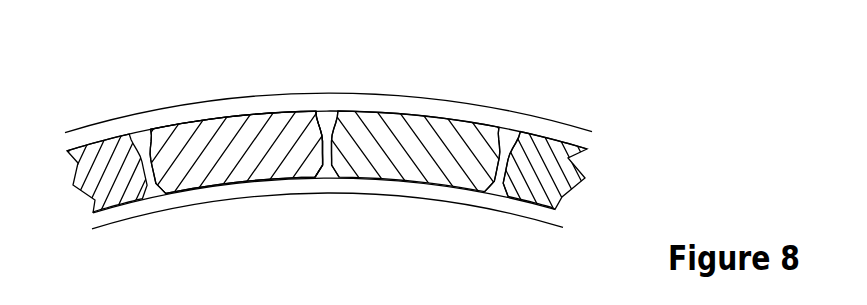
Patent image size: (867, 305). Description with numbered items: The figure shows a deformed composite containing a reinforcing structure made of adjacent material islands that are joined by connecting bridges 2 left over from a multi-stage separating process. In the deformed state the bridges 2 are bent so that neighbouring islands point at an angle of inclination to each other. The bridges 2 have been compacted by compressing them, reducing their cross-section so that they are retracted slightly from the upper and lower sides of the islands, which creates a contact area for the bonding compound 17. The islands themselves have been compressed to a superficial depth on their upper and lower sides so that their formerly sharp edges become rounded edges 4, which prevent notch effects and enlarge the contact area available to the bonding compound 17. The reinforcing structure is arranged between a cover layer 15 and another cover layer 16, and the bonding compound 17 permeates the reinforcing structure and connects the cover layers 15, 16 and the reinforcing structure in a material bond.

The connecting bridge 2 is at (322, 143).
The rounded edges 4 is at (513, 132).
The cover layer 15 is at (390, 110).
The another cover layer 16 is at (337, 186).
The bonding compound 17 is at (327, 137).